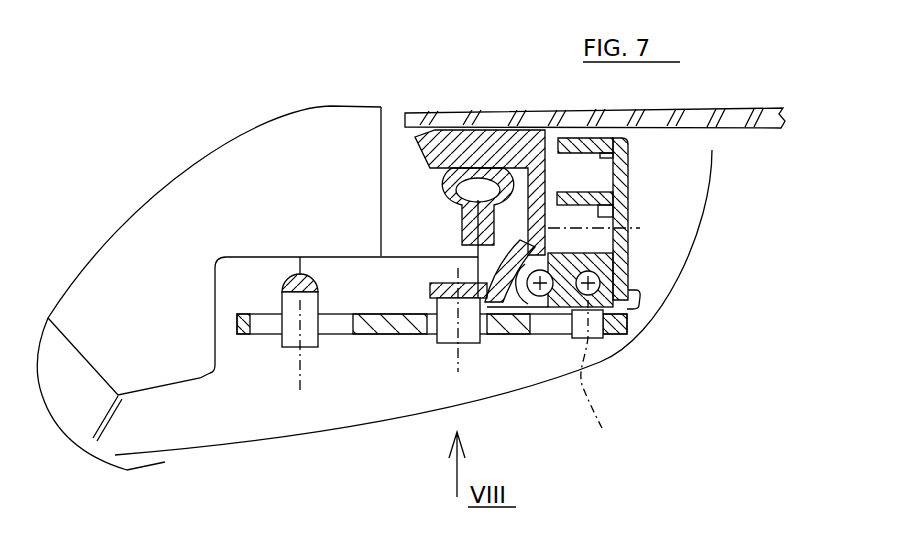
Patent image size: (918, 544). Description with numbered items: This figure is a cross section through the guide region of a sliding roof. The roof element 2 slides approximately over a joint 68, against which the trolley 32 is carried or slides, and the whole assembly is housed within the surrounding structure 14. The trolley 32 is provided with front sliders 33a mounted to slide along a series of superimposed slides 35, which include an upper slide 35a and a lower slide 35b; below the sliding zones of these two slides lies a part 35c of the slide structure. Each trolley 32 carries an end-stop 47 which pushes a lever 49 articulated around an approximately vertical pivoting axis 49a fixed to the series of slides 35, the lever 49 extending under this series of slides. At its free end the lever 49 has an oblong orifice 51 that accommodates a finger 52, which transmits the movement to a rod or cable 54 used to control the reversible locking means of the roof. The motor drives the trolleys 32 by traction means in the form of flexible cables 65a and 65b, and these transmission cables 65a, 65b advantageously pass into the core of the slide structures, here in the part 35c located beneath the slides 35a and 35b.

The roof element 2 is at (527, 117).
The housing 14 is at (233, 163).
The trolley 32 is at (430, 158).
The front sliders 33a is at (600, 253).
The series of superimposed slides 35 is at (630, 172).
The upper slide 35a is at (602, 158).
The lower slide 35b is at (602, 222).
The part of the slide structure 35c is at (600, 290).
The end-stop 47 is at (443, 332).
The lever 49 is at (365, 330).
The pivoting axis 49a is at (611, 380).
The oblong orifice 51 is at (258, 333).
The finger 52 is at (292, 347).
The rod or cable 54 is at (316, 284).
The cable 65a is at (545, 300).
The cable 65b is at (590, 301).
The joint 68 is at (457, 182).